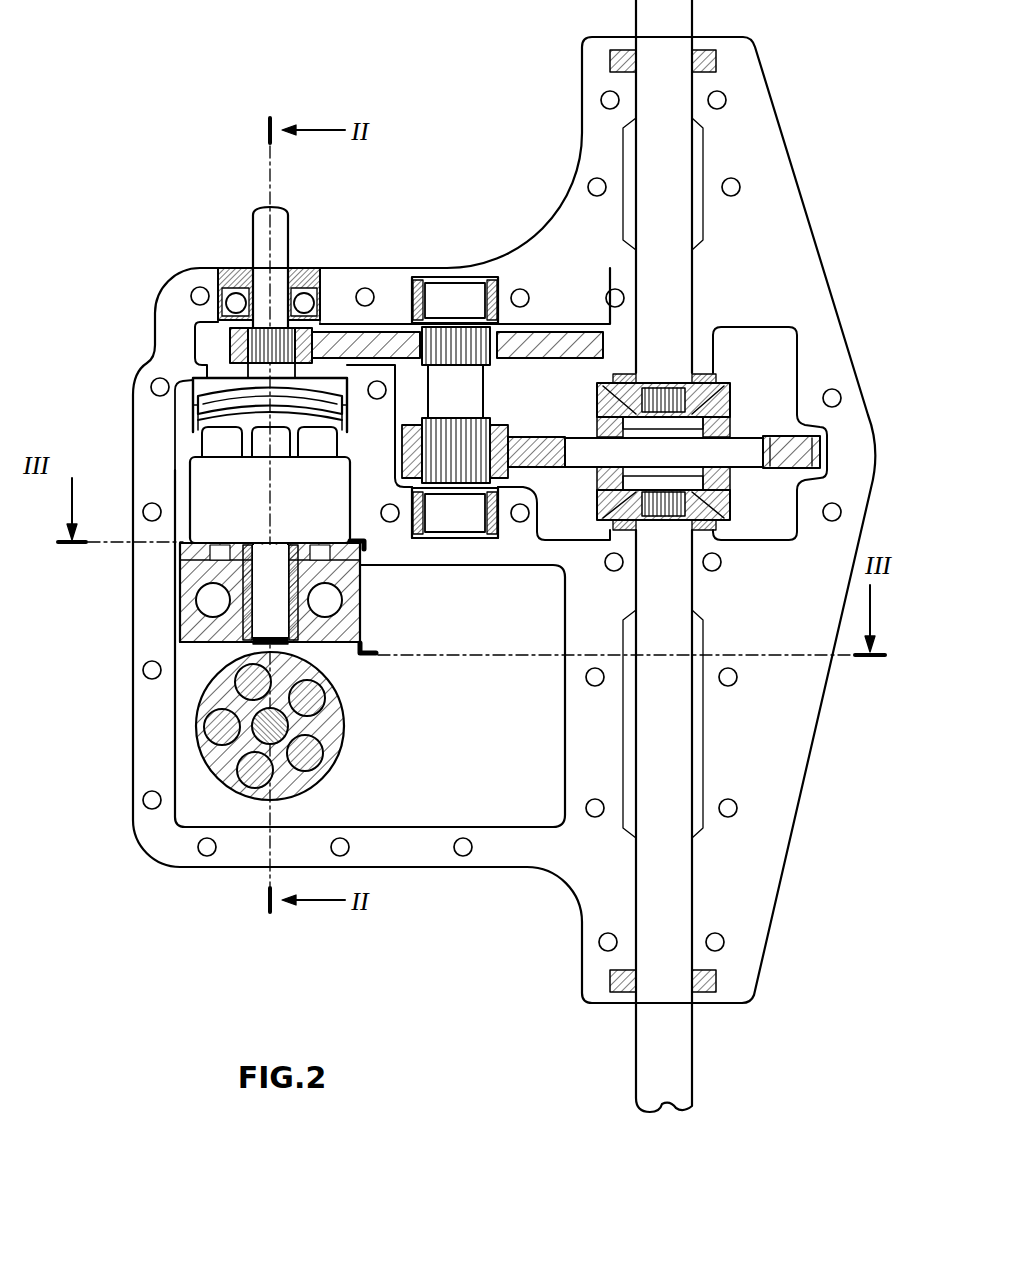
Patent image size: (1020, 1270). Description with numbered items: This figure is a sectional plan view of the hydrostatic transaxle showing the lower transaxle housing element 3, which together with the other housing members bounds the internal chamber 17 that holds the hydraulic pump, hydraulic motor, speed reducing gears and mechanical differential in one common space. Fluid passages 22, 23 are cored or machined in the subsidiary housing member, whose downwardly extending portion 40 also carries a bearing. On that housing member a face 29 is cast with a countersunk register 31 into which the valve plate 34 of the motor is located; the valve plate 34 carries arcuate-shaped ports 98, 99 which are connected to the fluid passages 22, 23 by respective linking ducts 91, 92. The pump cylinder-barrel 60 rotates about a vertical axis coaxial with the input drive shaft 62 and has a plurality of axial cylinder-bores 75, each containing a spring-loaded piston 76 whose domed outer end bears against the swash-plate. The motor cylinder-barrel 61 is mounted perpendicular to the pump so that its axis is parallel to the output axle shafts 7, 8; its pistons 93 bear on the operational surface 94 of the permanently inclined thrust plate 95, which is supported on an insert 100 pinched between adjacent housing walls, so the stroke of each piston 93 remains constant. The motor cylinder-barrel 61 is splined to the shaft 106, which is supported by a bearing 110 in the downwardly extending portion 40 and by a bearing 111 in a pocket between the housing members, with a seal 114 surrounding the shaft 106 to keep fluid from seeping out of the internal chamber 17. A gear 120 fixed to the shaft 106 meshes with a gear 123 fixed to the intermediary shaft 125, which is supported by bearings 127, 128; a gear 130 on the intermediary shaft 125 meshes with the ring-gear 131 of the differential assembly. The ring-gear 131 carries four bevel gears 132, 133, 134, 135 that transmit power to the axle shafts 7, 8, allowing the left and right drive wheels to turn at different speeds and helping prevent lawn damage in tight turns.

The lower transaxle housing element 3 is at (600, 140).
The output axle shaft 7 is at (650, 1071).
The output axle shaft 8 is at (678, 35).
The internal chamber 17 is at (500, 771).
The fluid passage 22 is at (326, 617).
The fluid passage 23 is at (213, 602).
The face 29 is at (362, 548).
The countersunk register 31 is at (190, 546).
The valve plate 34 is at (362, 540).
The downwardly extending portion 40 is at (197, 644).
The pump cylinder-barrel 60 is at (243, 763).
The motor cylinder-barrel 61 is at (307, 516).
The input drive shaft 62 is at (196, 727).
The axial cylinder-bore 75 is at (323, 741).
The piston 76 is at (305, 760).
The linking duct 91 is at (292, 560).
The linking duct 92 is at (218, 578).
The piston 93 is at (187, 443).
The operational surface 94 is at (205, 421).
The thrust plate 95 is at (198, 403).
The bearing cap segment 98 is at (323, 550).
The cylinder block 99 is at (222, 548).
The insert 100 is at (208, 365).
The shaft 106 is at (283, 238).
The bearing 110 is at (310, 614).
The bearing 111 is at (225, 292).
The seal 114 is at (315, 268).
The gear 120 is at (225, 344).
The gear 123 is at (533, 350).
The intermediary-shaft 125 is at (437, 409).
The bearing 127 is at (497, 538).
The bearing 128 is at (425, 287).
The gear 130 is at (500, 428).
The ring-gear 131 is at (542, 467).
The bevel gear 132 is at (600, 405).
The bevel gear 133 is at (605, 520).
The bevel gear 134 is at (707, 388).
The bevel gear 135 is at (723, 484).